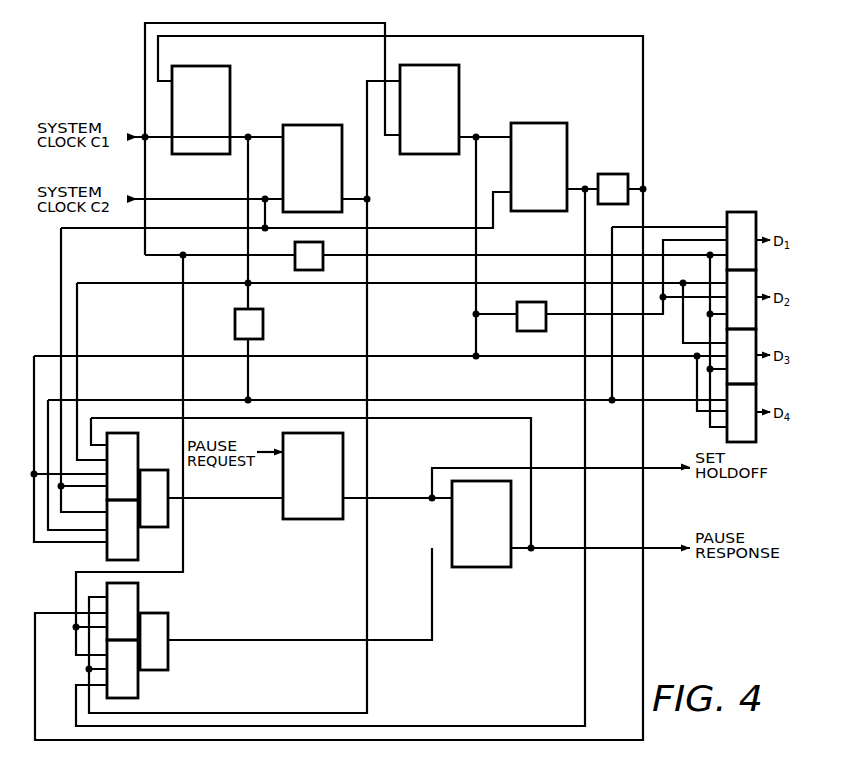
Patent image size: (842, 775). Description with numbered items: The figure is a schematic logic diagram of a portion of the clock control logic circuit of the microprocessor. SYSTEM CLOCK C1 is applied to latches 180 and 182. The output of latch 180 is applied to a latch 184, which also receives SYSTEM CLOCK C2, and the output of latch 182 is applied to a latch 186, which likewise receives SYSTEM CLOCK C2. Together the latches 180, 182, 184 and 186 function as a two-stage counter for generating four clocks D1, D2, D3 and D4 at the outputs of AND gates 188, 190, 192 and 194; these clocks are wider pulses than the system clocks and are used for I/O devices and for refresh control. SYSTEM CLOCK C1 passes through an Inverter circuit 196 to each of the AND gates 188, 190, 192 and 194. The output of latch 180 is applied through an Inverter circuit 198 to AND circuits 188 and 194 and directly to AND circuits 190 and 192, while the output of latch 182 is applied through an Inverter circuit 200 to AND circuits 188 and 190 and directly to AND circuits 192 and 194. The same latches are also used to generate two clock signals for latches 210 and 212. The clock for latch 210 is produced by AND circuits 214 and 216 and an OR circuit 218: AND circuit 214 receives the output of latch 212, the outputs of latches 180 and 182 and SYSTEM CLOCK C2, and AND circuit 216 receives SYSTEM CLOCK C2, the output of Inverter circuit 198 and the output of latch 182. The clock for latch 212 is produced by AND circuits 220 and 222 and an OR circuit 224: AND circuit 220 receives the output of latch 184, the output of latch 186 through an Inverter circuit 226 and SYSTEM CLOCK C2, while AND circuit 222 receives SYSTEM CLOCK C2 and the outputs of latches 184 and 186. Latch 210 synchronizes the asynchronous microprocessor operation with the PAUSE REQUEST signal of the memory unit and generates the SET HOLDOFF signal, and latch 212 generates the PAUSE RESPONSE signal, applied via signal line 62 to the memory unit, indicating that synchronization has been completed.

The latch 180 is at (222, 97).
The latch 182 is at (450, 95).
The latch 184 is at (327, 131).
The latch 186 is at (550, 133).
The AND gate 188 is at (746, 239).
The AND gate 190 is at (747, 290).
The AND gate 192 is at (747, 346).
The AND gate 194 is at (747, 404).
The Inverter circuit 196 is at (321, 263).
The Inverter circuit 198 is at (264, 325).
The Inverter circuit 200 is at (535, 331).
The latch 210 is at (331, 517).
The latch 212 is at (500, 560).
The AND circuit 214 is at (136, 450).
The AND circuit 216 is at (128, 549).
The OR circuit 218 is at (156, 491).
The AND circuit 220 is at (128, 593).
The AND circuit 222 is at (133, 686).
The OR circuit 224 is at (158, 627).
The Inverter circuit 226 is at (618, 173).
The signal line 62 is at (682, 548).